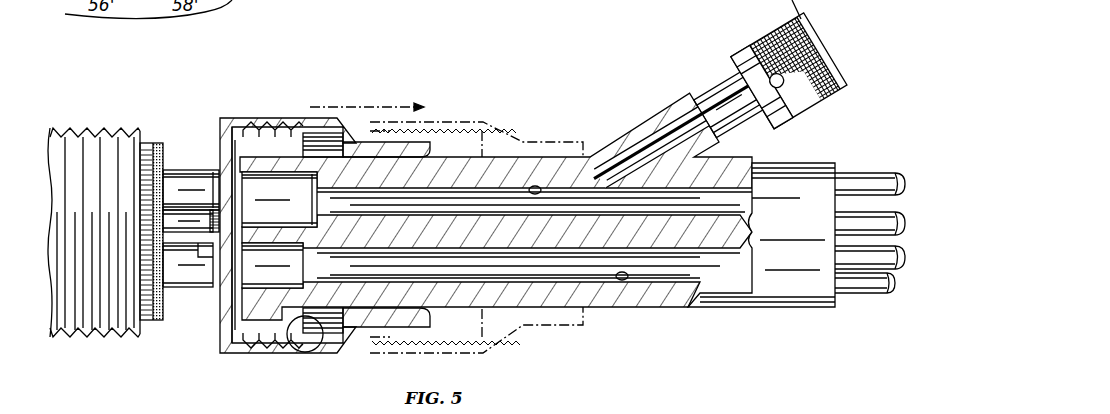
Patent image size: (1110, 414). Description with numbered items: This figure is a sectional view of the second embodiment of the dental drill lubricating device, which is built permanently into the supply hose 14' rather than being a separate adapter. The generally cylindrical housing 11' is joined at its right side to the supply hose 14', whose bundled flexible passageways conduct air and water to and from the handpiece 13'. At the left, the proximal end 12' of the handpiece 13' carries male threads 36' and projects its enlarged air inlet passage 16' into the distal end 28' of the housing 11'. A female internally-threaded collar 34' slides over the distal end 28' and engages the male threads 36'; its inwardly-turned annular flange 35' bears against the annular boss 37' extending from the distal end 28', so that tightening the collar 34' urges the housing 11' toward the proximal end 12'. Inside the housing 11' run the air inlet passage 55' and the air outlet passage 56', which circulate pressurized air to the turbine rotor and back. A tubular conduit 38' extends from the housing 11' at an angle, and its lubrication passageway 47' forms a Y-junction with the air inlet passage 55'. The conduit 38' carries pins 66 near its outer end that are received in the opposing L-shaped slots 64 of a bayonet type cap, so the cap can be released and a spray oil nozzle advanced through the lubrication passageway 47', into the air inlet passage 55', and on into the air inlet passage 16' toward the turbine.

The male threads 36' is at (94, 220).
The handpiece 13' is at (118, 257).
The proximal end of handpiece 12' is at (133, 247).
The air inlet passage 16' is at (191, 213).
The distal end of housing 28' is at (282, 209).
The female internally-threaded collar 34' is at (316, 119).
The inwardly-turned annular flange 35' is at (329, 346).
The annular boss 37' is at (296, 350).
The tubular conduit 38' is at (496, 138).
The lubrication passageway 47' is at (902, 207).
The air inlet passage 55' is at (547, 154).
The air outlet passage 56' is at (616, 313).
The L-shaped slots 64 is at (920, 207).
The pins 66 is at (920, 207).
The supply hose 14' is at (870, 216).
The housing 11' is at (761, 251).